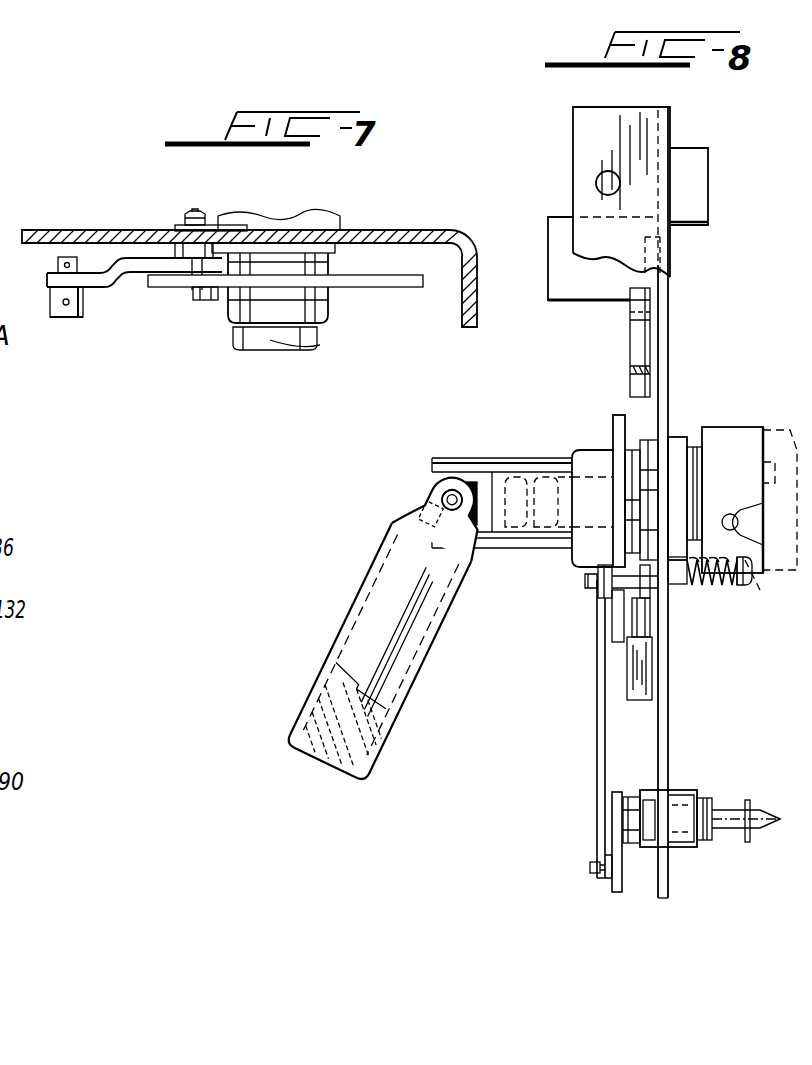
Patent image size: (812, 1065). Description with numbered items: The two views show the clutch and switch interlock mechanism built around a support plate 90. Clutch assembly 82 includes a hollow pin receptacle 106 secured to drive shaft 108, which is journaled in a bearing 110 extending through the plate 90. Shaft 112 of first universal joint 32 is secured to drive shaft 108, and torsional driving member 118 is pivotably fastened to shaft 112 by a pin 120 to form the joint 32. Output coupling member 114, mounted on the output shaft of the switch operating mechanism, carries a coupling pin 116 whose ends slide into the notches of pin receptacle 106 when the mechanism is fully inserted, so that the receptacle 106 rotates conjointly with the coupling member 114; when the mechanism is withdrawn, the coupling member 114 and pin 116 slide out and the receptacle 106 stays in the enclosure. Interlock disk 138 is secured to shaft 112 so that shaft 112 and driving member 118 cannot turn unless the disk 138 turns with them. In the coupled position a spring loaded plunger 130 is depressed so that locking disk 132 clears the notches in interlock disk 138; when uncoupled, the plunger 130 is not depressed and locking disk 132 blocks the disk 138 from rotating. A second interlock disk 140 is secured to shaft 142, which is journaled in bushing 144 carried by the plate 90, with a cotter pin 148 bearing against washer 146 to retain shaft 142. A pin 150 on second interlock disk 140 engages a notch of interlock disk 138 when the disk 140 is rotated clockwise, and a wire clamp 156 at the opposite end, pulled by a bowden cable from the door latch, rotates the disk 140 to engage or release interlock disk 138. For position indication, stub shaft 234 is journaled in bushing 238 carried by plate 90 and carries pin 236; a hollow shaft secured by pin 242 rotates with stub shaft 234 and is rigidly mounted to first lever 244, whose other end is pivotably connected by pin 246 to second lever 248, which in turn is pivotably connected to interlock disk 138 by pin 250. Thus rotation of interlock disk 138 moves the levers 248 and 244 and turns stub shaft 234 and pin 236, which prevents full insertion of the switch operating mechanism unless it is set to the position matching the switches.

In FIG. 8, the first universal joint 32 is at (424, 434).
In FIG. 7, the clutch assembly 82 is at (370, 180).
In FIG. 7, the support plate 90 is at (392, 229).
In FIG. 8, the support plate 90 is at (668, 318).
In FIG. 8, the pin receptacle 106 is at (710, 437).
In FIG. 8, the drive shaft 108 is at (550, 530).
In FIG. 8, the bearing 110 is at (690, 446).
In FIG. 7, the shaft 112 is at (325, 350).
In FIG. 8, the shaft 112 is at (460, 458).
In FIG. 8, the output coupling member 114 is at (772, 464).
In FIG. 8, the coupling pin 116 is at (752, 590).
In FIG. 8, the torsional driving member 118 is at (340, 628).
In FIG. 8, the pin 120 is at (445, 498).
In FIG. 8, the spring loaded plunger 130 is at (750, 592).
In FIG. 8, the locking disk 132 is at (628, 632).
In FIG. 7, the interlock disk 138 is at (372, 290).
In FIG. 7, the second interlock disk 140 is at (120, 282).
In FIG. 7, the shaft 142 is at (190, 212).
In FIG. 7, the bushing 144 is at (178, 246).
In FIG. 7, the washer 146 is at (182, 225).
In FIG. 7, the cotter pin 148 is at (203, 213).
In FIG. 7, the pin 150 is at (205, 302).
In FIG. 7, the wire clamp 156 is at (67, 320).
In FIG. 8, the stub shaft 234 is at (765, 830).
In FIG. 8, the pin 236 is at (748, 800).
In FIG. 8, the bushing 238 is at (680, 850).
In FIG. 8, the pin 242 is at (632, 845).
In FIG. 8, the first lever 244 is at (612, 893).
In FIG. 8, the pin 246 is at (590, 868).
In FIG. 8, the second lever 248 is at (597, 740).
In FIG. 8, the pin 250 is at (588, 580).